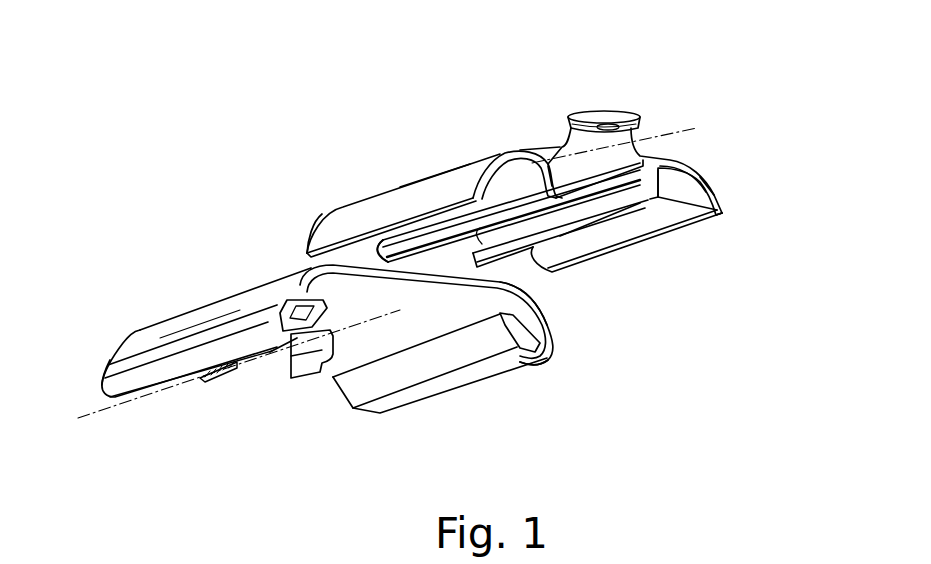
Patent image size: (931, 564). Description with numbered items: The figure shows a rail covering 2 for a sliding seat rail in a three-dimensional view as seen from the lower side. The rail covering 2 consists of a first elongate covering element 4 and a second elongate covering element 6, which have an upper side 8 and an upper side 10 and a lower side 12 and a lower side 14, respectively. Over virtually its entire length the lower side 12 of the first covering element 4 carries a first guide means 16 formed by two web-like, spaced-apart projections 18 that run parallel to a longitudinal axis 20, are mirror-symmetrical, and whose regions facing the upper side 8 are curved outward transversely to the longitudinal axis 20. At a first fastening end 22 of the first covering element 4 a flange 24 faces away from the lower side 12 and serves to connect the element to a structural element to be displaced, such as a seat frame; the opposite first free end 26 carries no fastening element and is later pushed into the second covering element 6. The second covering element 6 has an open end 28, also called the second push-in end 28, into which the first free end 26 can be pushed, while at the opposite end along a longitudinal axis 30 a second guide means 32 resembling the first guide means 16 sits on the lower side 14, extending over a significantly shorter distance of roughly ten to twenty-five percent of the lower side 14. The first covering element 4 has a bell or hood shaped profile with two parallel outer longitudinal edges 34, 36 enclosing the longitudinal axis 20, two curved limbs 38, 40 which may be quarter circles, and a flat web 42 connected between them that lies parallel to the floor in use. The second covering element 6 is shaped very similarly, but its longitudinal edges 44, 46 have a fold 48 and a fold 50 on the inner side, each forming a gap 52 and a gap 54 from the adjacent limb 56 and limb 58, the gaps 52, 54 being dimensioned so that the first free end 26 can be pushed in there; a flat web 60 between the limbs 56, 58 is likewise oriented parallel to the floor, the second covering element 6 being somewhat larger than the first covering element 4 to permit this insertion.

The rail covering 2 is at (269, 145).
The first elongate covering element 4 is at (668, 185).
The second elongate covering element 6 is at (182, 323).
The upper side 8 is at (525, 105).
The upper side 10 is at (243, 238).
The lower side 12 is at (682, 237).
The lower side 14 is at (239, 380).
The first guide means 16 is at (650, 222).
The projections 18 is at (524, 180).
The longitudinal axis 20 is at (687, 127).
The first fastening end 22 is at (615, 107).
The flange 24 is at (590, 117).
The first free end 26 is at (333, 205).
The open end 28 is at (452, 290).
The longitudinal axis 30 is at (95, 419).
The second guide means 32 is at (314, 390).
The outer longitudinal edge 34 is at (416, 205).
The outer longitudinal edge 36 is at (730, 213).
The curved limb 38 is at (467, 152).
The curved limb 40 is at (722, 182).
The flat web 42 is at (554, 137).
The longitudinal edge 44 is at (134, 357).
The longitudinal edge 46 is at (556, 366).
The fold 48 is at (283, 372).
The fold 50 is at (529, 377).
The gap 52 is at (286, 299).
The gap 54 is at (548, 330).
The limb 56 is at (217, 290).
The limb 58 is at (550, 303).
The flat web 60 is at (383, 251).